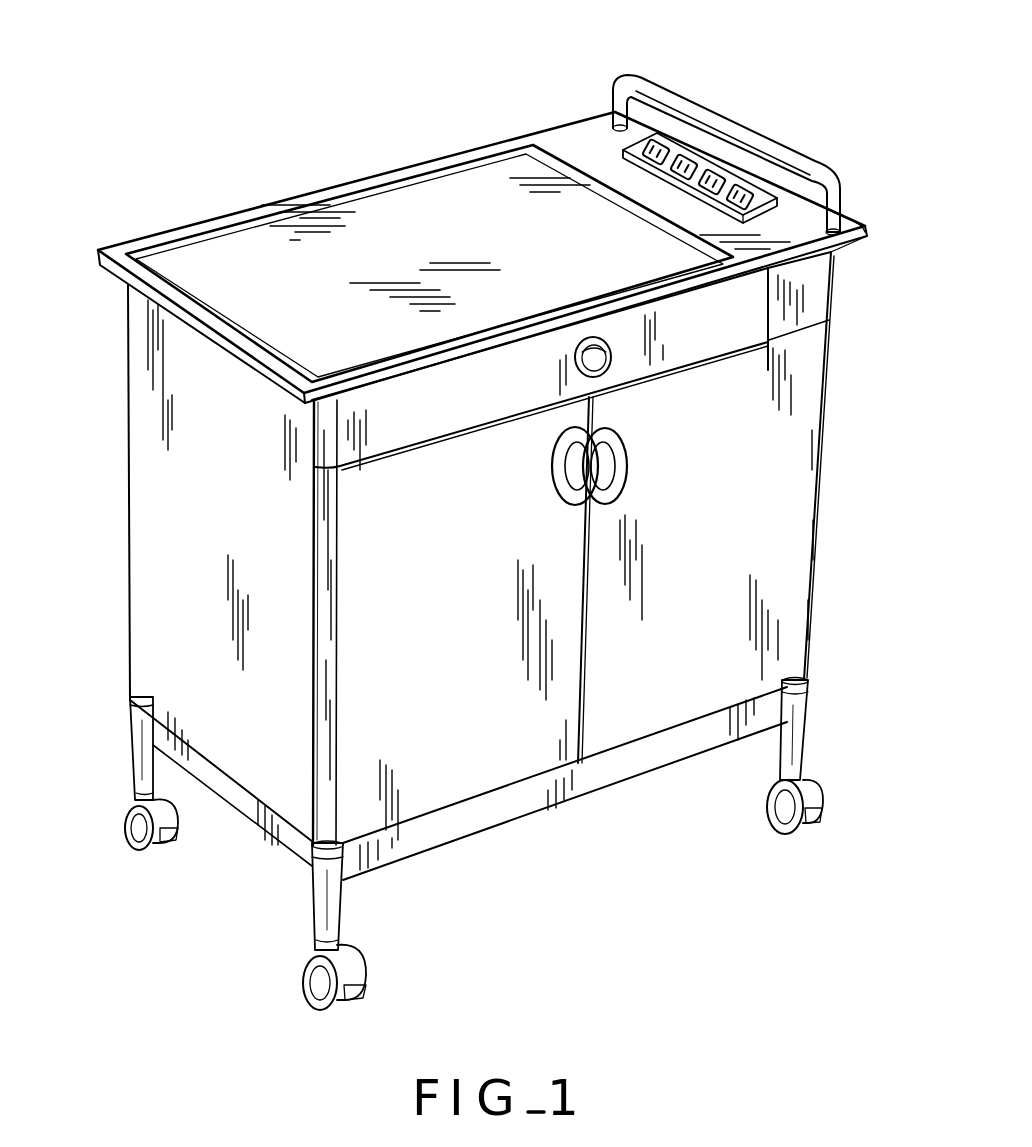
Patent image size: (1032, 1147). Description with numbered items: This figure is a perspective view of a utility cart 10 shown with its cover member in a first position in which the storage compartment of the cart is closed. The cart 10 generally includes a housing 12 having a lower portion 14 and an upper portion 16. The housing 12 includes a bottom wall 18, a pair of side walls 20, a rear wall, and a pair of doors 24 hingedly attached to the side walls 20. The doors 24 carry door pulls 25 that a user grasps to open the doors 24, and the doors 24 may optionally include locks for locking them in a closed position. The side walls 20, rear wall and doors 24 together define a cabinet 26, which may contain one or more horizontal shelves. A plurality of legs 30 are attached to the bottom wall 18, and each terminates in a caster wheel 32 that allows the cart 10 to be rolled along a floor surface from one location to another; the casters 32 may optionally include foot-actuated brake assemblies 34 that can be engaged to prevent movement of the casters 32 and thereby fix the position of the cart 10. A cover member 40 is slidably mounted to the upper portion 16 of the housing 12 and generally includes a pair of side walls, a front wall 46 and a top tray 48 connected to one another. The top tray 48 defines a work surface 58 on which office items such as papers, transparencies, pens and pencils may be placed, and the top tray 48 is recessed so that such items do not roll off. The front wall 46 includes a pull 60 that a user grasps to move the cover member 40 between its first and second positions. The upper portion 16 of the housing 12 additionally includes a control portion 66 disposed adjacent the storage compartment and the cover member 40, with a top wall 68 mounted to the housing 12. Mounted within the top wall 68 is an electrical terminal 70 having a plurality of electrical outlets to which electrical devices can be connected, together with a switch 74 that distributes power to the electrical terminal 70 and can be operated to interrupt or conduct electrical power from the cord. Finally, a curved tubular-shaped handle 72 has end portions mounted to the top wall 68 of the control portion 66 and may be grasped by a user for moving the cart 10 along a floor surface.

The utility cart 10 is at (174, 86).
The housing 12 is at (108, 385).
The lower portion 14 is at (116, 689).
The upper portion 16 is at (86, 258).
The bottom wall 18 is at (238, 807).
The side walls 20 is at (231, 506).
The doors 24 is at (472, 586).
The door pulls 25 is at (552, 467).
The cabinet 26 is at (838, 457).
The legs 30 is at (132, 751).
The caster wheels 32 is at (126, 816).
The foot-actuated brake assemblies 34 is at (164, 848).
The cover member 40 is at (220, 214).
The front wall 46 is at (717, 341).
The top tray 48 is at (372, 176).
The work surface 58 is at (492, 244).
The pull 60 is at (606, 367).
The control portion 66 is at (732, 140).
The top wall 68 is at (846, 223).
The electrical terminal 70 is at (649, 108).
The handle 72 is at (705, 104).
The switch 74 is at (762, 181).